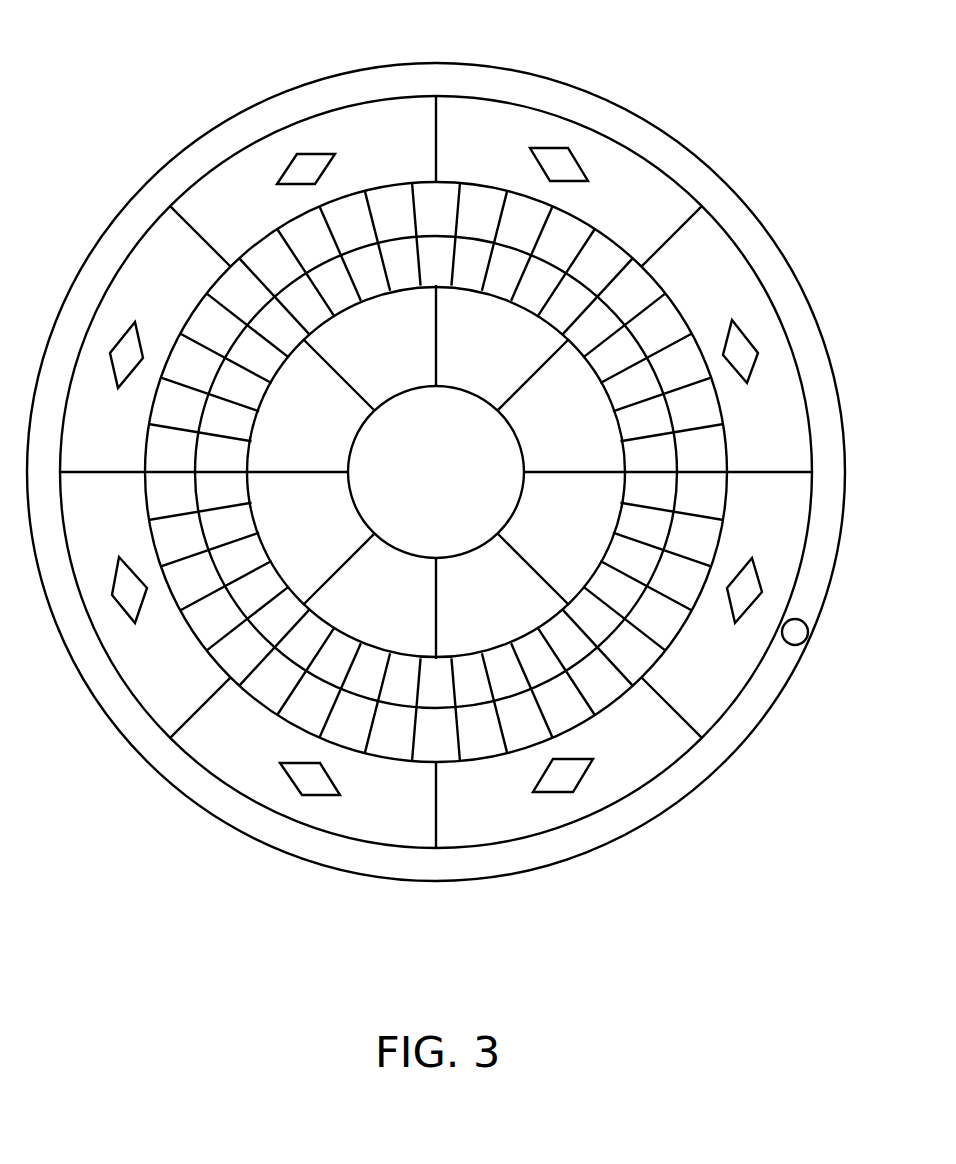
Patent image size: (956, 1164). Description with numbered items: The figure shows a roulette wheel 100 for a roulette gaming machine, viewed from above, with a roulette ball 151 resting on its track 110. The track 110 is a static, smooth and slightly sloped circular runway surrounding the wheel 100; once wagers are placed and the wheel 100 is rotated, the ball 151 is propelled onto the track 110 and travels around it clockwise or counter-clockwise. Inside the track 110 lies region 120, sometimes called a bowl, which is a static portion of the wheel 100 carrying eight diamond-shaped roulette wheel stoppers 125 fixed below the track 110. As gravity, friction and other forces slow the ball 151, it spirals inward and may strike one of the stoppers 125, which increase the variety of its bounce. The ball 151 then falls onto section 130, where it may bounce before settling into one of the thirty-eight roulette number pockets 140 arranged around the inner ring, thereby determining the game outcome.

The roulette wheel 100 is at (125, 88).
The track 110 is at (104, 244).
The region 120 is at (366, 124).
The roulette wheel stoppers 125 is at (562, 165).
The section 130 is at (704, 400).
The roulette number pocket 140 is at (402, 693).
The roulette ball 151 is at (806, 639).